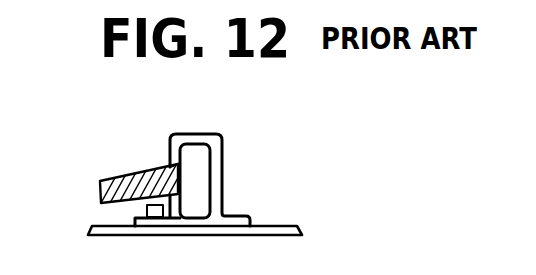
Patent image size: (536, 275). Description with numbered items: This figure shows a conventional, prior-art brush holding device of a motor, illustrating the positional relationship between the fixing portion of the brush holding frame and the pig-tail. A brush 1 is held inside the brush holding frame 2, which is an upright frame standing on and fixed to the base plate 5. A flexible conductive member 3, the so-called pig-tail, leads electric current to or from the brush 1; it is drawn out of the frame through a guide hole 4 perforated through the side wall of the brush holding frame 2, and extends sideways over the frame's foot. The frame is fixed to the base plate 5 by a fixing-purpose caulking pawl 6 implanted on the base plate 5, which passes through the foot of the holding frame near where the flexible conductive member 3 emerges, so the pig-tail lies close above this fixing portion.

The brush 1 is at (197, 167).
The brush holding frame 2 is at (223, 147).
The flexible conductive member 3 is at (120, 181).
The guide hole 4 is at (166, 169).
The base plate 5 is at (268, 226).
The fixing-purpose caulking pawl 6 is at (145, 210).